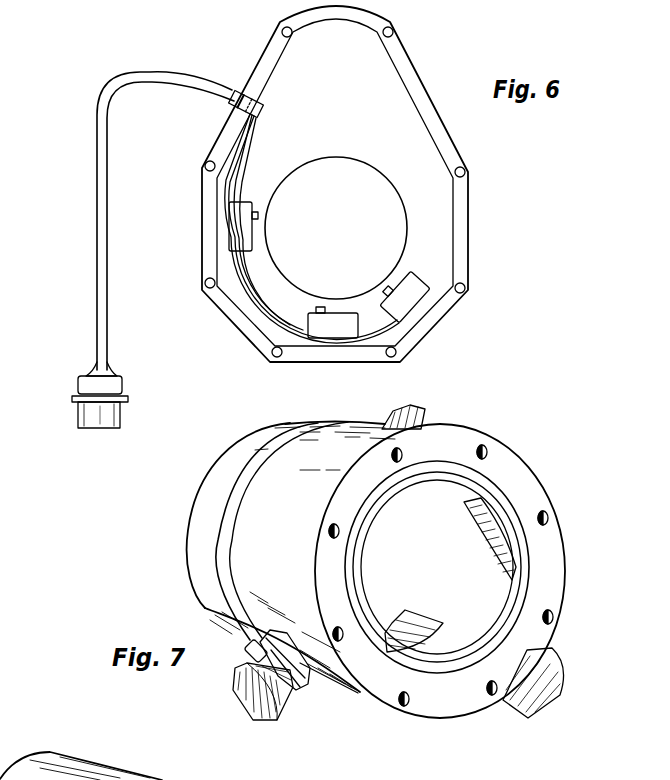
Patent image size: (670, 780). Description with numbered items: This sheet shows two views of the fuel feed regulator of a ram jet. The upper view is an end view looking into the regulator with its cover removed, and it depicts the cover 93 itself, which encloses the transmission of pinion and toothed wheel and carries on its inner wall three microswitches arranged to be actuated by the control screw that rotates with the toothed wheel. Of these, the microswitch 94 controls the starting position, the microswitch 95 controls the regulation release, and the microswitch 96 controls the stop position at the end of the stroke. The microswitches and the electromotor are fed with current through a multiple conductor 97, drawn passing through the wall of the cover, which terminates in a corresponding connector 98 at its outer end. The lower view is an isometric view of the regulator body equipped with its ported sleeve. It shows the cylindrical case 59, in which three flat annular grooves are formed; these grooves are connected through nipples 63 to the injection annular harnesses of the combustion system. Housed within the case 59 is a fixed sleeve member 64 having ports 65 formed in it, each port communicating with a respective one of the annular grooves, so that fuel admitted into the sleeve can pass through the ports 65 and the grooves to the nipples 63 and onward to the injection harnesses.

In FIG. 6, the cover 93 is at (424, 103).
In FIG. 6, the microswitch 94 is at (407, 286).
In FIG. 6, the microswitch 95 is at (337, 325).
In FIG. 6, the microswitch 96 is at (245, 232).
In FIG. 6, the multiple conductor 97 is at (99, 214).
In FIG. 6, the connector 98 is at (78, 421).
In FIG. 7, the cylindrical case 59 is at (457, 445).
In FIG. 7, the nipple 63 is at (291, 701).
In FIG. 7, the fixed sleeve member 64 is at (517, 585).
In FIG. 7, the port 65 is at (492, 516).